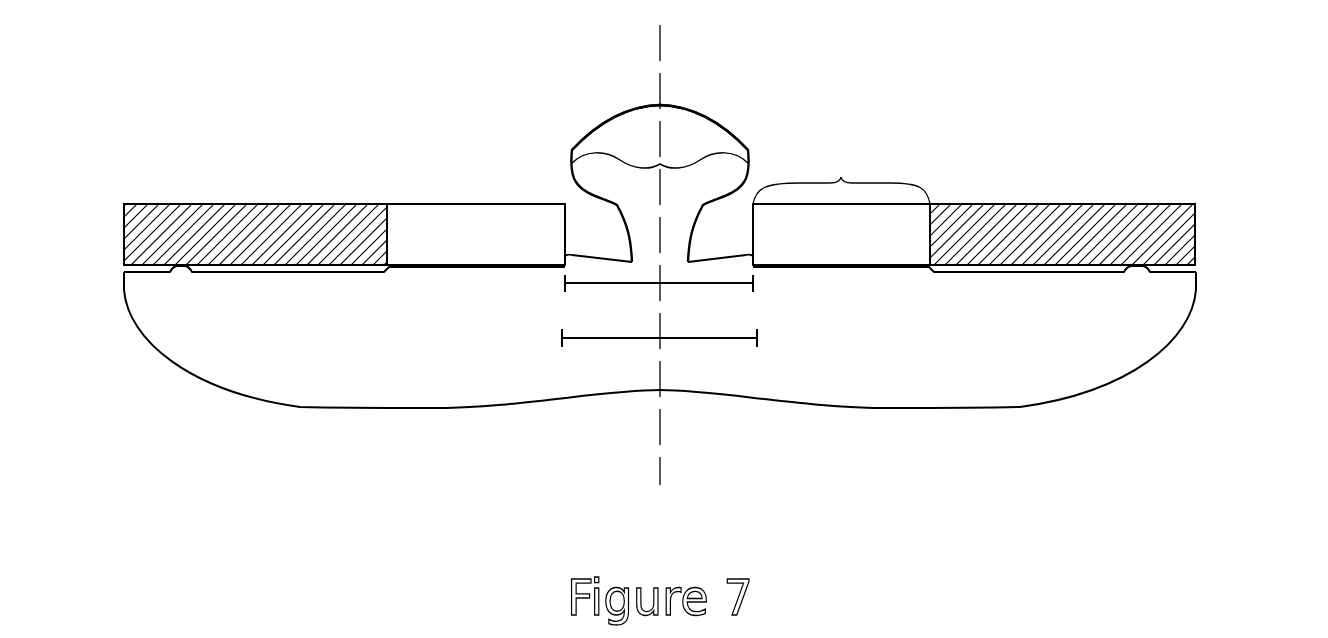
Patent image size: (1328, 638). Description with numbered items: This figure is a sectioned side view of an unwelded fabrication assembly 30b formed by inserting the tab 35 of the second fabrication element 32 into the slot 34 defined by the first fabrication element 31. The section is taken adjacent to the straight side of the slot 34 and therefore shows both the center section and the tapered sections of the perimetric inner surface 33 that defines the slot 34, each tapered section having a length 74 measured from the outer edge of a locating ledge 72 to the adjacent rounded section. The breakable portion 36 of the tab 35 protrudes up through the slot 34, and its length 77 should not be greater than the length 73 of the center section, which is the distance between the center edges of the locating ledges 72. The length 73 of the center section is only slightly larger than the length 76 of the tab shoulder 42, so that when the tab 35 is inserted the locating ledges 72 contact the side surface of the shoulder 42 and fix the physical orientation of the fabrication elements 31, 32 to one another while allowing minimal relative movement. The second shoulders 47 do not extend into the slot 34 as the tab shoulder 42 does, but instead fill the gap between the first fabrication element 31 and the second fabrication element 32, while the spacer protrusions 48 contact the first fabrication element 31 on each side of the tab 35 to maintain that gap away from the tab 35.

The unwelded fabrication assembly 30b is at (1067, 177).
The first fabrication element 31 is at (1197, 232).
The second fabrication element 32 is at (433, 334).
The perimetric inner surface 33 is at (387, 242).
The slot 34 is at (387, 218).
The tab 35 is at (685, 165).
The breakable portion 36 is at (607, 118).
The tab shoulder 42 is at (743, 254).
The second shoulders 47 is at (505, 268).
The spacer protrusions 48 is at (178, 273).
The locating ledges 72 is at (566, 238).
The length of the center section 73 is at (735, 340).
The length of the tapered section 74 is at (841, 174).
The length of the shoulder 76 is at (699, 284).
The length of the breakable portion 77 is at (660, 152).